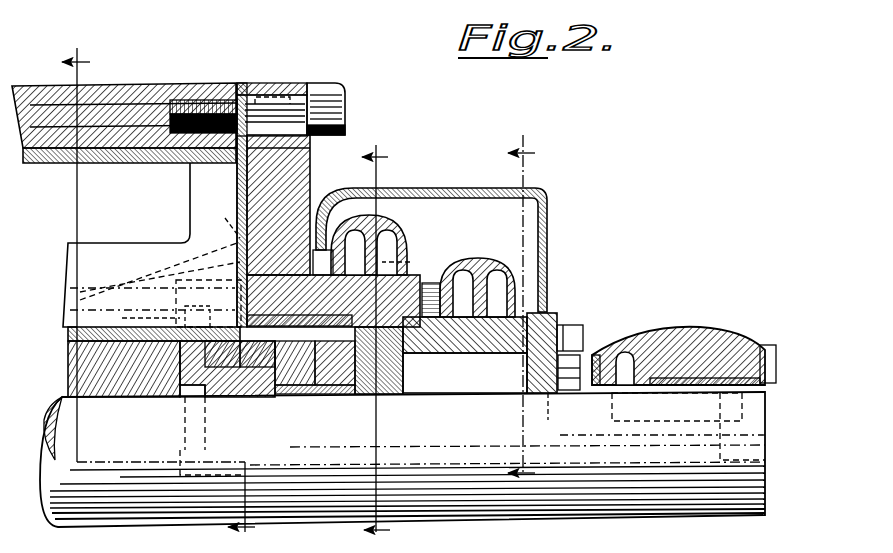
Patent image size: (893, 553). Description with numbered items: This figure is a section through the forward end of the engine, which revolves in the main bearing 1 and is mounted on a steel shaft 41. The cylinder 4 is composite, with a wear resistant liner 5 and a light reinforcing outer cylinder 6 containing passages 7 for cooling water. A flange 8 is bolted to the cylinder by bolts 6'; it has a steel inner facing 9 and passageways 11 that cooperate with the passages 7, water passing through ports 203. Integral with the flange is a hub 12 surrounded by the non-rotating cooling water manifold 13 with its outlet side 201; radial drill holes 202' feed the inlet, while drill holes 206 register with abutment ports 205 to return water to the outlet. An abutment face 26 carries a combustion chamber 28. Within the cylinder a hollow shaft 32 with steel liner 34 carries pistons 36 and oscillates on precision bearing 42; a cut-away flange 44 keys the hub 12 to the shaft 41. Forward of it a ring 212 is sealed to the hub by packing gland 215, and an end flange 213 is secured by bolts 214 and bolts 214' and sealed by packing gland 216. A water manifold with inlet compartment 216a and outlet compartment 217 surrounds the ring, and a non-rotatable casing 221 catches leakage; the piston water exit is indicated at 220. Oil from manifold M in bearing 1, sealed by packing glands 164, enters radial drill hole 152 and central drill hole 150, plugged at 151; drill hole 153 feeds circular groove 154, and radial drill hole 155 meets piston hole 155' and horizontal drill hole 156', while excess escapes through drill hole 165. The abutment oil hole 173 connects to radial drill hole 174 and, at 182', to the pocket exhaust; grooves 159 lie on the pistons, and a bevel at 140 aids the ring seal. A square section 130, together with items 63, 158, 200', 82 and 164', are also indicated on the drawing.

The reinforcing outer cylinder 6 is at (273, 277).
The cooling water passages 7 is at (166, 85).
The cylinder 4 is at (198, 85).
The ports 203 is at (262, 95).
The flange 8 is at (288, 83).
The bolts 6' is at (329, 91).
The cooling water passageways 11 is at (311, 156).
The steel inner facing 9 is at (236, 180).
The cylinder liner 5 is at (136, 163).
The main bearing 1 is at (688, 333).
The combustion chamber 28 is at (133, 203).
The abutment outer face 26 is at (86, 285).
The connection of drill hole 182' is at (160, 270).
The horizontal drill hole 156' is at (158, 266).
The ports 205 is at (219, 220).
The drill holes 206 is at (265, 252).
The radial drill hole 174 is at (152, 296).
The longitudinal drill hole 173 is at (152, 318).
The bevel 140 is at (208, 303).
The piston drill hole 155' is at (151, 320).
The shaft liner 34 is at (66, 337).
The radial drill hole 155 is at (124, 369).
The hollow shaft 32 is at (118, 388).
The insert 63 is at (227, 369).
The exit drill hole location 220 is at (224, 354).
The ring 158 is at (257, 354).
The piston grooves 159 is at (295, 363).
The square section 130 is at (315, 367).
The pistons 36 is at (379, 360).
The circular groove 154 is at (203, 390).
The second radial drill hole 153 is at (195, 445).
The precision bearing 42 is at (314, 396).
The hub 12 is at (415, 278).
The bracket 200' is at (343, 226).
The outlet side of water manifold 201 is at (400, 226).
The cooling water manifold 13 is at (408, 245).
The radial drill holes 202' is at (412, 250).
The non-rotatable casing 221 is at (470, 190).
The outlet compartment 217 is at (492, 270).
The inlet compartment 216a is at (463, 260).
The packing gland 215 is at (465, 335).
The shaft portion 82 is at (531, 446).
The cut-away flange 44 is at (410, 378).
The ring 212 is at (493, 355).
The end flange 213 is at (550, 312).
The bolts 214' is at (585, 320).
The bolts 214 is at (586, 351).
The oil manifold M is at (645, 338).
The packing glands 164 is at (787, 383).
The packing gland 216 is at (550, 394).
The stop 164' is at (597, 402).
The radial drill hole 152 is at (640, 420).
The drill hole 165 is at (712, 410).
The central drill hole 150 is at (316, 452).
The plug 151 is at (742, 465).
The steel shaft 41 is at (745, 498).